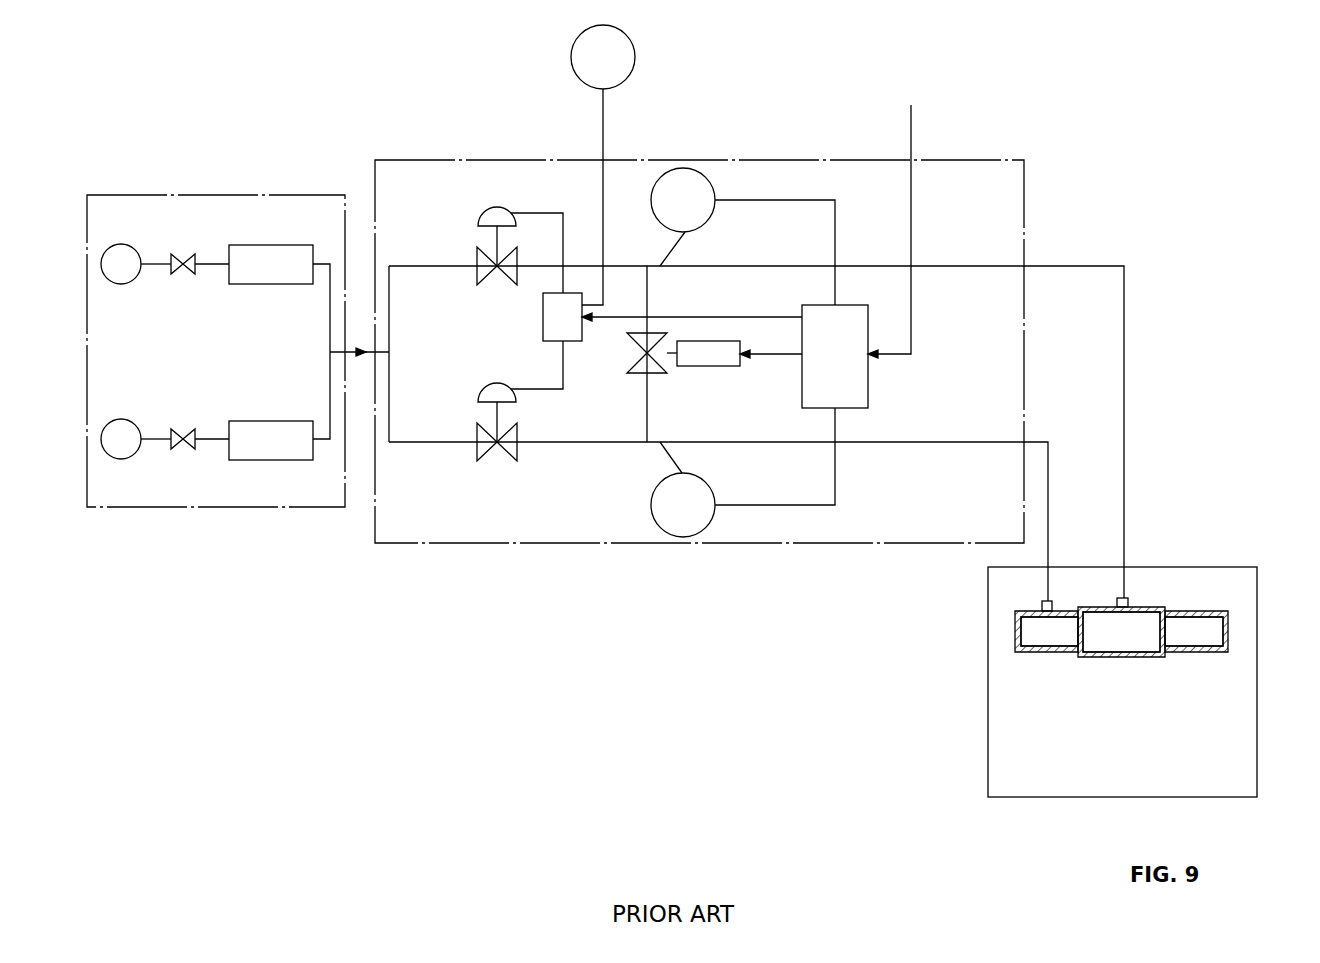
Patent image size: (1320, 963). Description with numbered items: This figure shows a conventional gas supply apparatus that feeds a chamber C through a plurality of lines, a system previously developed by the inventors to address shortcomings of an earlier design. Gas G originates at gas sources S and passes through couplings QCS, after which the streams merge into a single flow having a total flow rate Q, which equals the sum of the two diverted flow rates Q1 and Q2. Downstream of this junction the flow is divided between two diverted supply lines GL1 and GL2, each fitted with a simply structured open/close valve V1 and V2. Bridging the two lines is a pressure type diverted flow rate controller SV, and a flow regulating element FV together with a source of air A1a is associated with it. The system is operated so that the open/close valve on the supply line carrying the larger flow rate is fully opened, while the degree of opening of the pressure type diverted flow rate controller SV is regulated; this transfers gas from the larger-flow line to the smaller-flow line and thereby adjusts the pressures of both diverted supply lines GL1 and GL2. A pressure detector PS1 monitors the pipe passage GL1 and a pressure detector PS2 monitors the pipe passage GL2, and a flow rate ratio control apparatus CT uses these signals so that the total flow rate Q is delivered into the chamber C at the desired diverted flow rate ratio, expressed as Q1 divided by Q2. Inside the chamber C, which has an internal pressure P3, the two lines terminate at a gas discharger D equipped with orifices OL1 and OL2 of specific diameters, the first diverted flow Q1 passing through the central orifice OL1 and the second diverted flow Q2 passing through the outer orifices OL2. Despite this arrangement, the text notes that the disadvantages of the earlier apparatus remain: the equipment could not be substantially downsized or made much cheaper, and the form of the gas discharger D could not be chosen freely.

The gas source S is at (121, 351).
The quick coupling system QCS is at (271, 352).
The gas G is at (163, 464).
The total flow rate Q is at (359, 367).
The open/close valve V1 is at (495, 281).
The open/close valve V2 is at (490, 450).
The pressure type diverted flow rate controller SV is at (562, 317).
The flow control valve FV is at (627, 367).
The source of air A1a is at (635, 57).
The flow rate ratio control apparatus CT is at (835, 356).
The pressure detector of the pipe passage GL1 PS1 is at (743, 236).
The pressure detector of the pipe passage GL2 PS2 is at (743, 472).
The diverted supply line GL1 is at (929, 266).
The diverted supply line GL2 is at (930, 442).
The flow rate of the No. 1 flow diverting pipe passage Q1 is at (968, 299).
The flow rate of the No. 2 flow diverting pipe passage Q2 is at (968, 472).
The chamber C is at (1257, 700).
The internal pressure of the chamber P3 is at (1023, 752).
The gas discharger D is at (1145, 608).
The orifice OL1 is at (1140, 658).
The orifice OL2 is at (1042, 652).